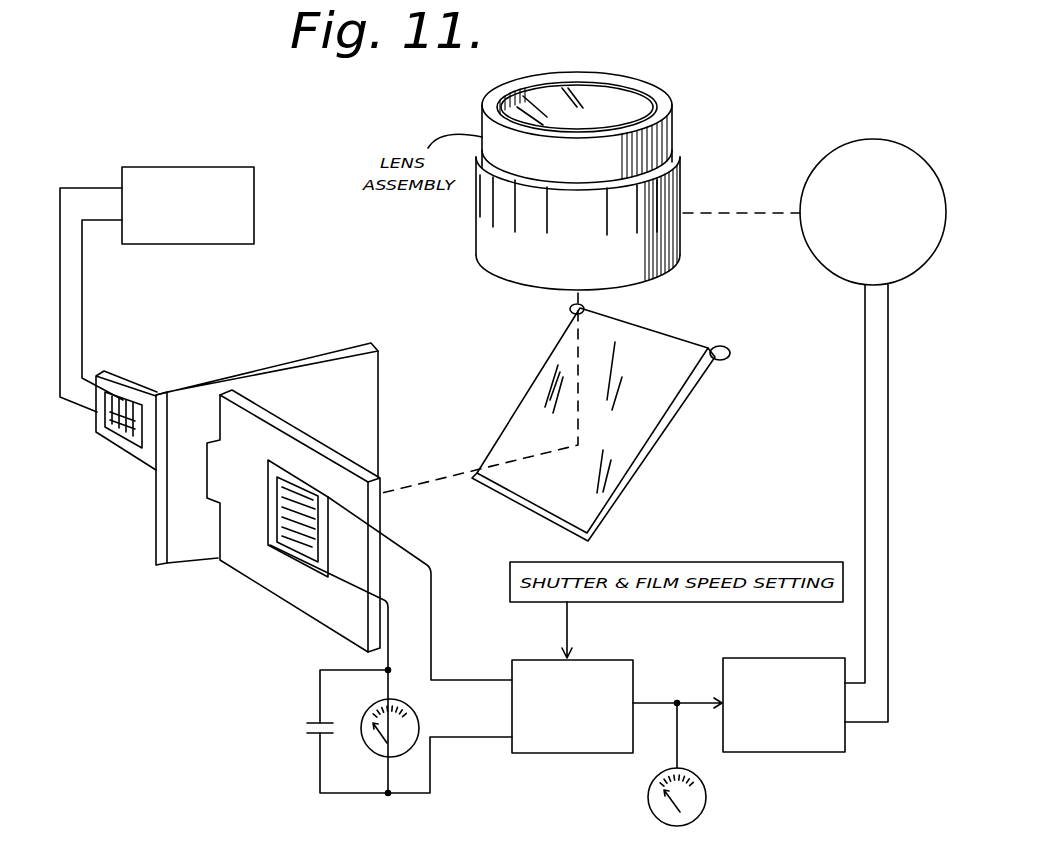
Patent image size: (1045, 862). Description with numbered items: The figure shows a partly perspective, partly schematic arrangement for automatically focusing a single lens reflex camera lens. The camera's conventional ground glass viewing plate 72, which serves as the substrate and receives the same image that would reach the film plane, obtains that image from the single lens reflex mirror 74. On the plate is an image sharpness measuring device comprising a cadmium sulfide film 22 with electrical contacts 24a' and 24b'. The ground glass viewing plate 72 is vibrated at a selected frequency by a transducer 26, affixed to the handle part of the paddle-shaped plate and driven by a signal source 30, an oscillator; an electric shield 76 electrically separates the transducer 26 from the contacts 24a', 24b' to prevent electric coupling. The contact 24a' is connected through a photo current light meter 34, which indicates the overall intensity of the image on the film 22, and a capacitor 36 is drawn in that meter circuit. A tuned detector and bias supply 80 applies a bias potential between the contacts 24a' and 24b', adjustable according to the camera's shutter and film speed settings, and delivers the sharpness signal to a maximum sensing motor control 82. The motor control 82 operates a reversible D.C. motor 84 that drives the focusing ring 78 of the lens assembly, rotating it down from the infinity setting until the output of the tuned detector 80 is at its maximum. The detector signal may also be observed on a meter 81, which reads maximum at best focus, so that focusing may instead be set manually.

The signal source 30 is at (188, 205).
The transducer 26 is at (123, 400).
The electric shield 76 is at (157, 547).
The ground glass viewing plate 72 is at (232, 566).
The cadmium sulfide film 22 is at (297, 478).
The electrical contact 24a' is at (347, 670).
The electrical contact 24b' is at (420, 588).
The capacitor 36 is at (307, 727).
The meter 34 is at (372, 740).
The tuned detector and bias supply 80 is at (585, 658).
The maximum sensing motor control 82 is at (802, 658).
The meter 81 is at (714, 818).
The reversible D.C. motor 84 is at (898, 138).
The focusing ring 78 is at (682, 167).
The single lens reflex mirror 74 is at (675, 410).